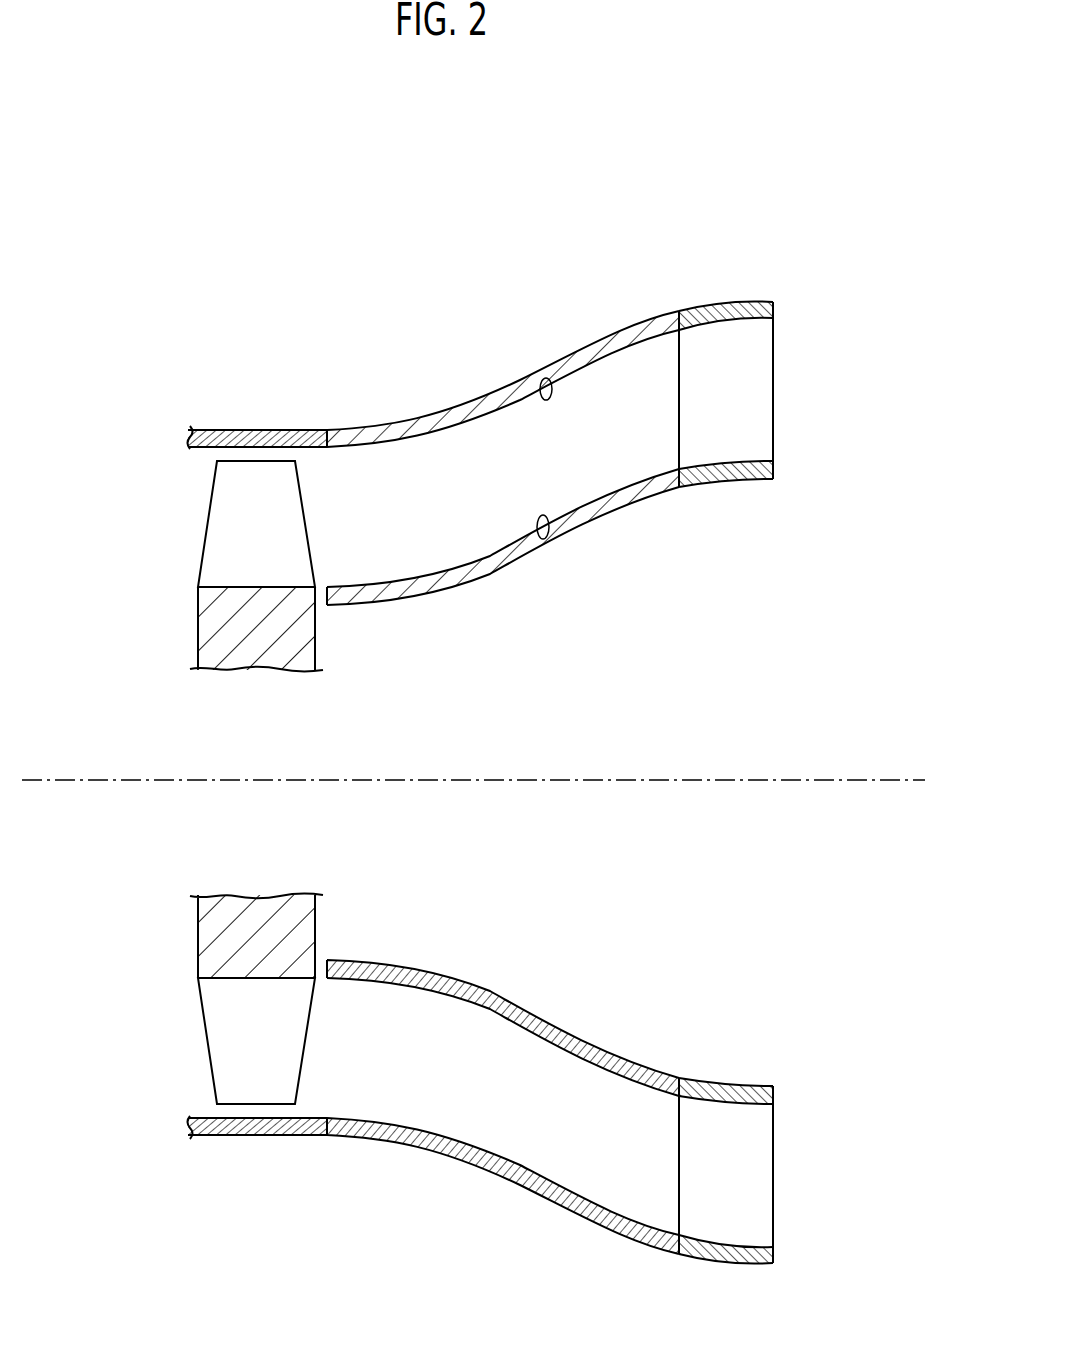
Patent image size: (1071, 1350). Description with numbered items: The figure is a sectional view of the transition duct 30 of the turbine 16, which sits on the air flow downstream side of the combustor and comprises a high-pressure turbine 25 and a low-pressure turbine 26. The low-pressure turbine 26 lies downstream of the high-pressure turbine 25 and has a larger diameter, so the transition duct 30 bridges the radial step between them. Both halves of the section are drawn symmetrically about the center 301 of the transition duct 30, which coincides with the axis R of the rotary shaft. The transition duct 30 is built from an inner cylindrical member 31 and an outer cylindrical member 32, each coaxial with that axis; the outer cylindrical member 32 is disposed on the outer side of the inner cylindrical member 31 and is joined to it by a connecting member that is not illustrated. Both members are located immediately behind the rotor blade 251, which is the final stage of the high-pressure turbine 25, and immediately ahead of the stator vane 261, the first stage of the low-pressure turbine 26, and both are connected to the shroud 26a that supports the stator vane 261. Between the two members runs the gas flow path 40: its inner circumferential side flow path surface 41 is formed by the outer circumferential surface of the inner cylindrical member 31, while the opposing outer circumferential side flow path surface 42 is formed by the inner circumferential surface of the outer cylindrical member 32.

The turbine 16 is at (214, 392).
The high-pressure turbine 25 is at (176, 494).
The rotor blade 251 is at (228, 540).
The transition duct 30 is at (502, 751).
The inner cylindrical member 31 is at (483, 566).
The outer cylindrical member 32 is at (494, 398).
The gas flow path 40 is at (400, 466).
The inner circumferential side flow path surface 41 is at (545, 539).
The outer circumferential side flow path surface 42 is at (546, 378).
The low-pressure turbine 26 is at (770, 755).
The shroud 26a is at (720, 301).
The stator vane 261 is at (752, 383).
The center 301 is at (673, 779).